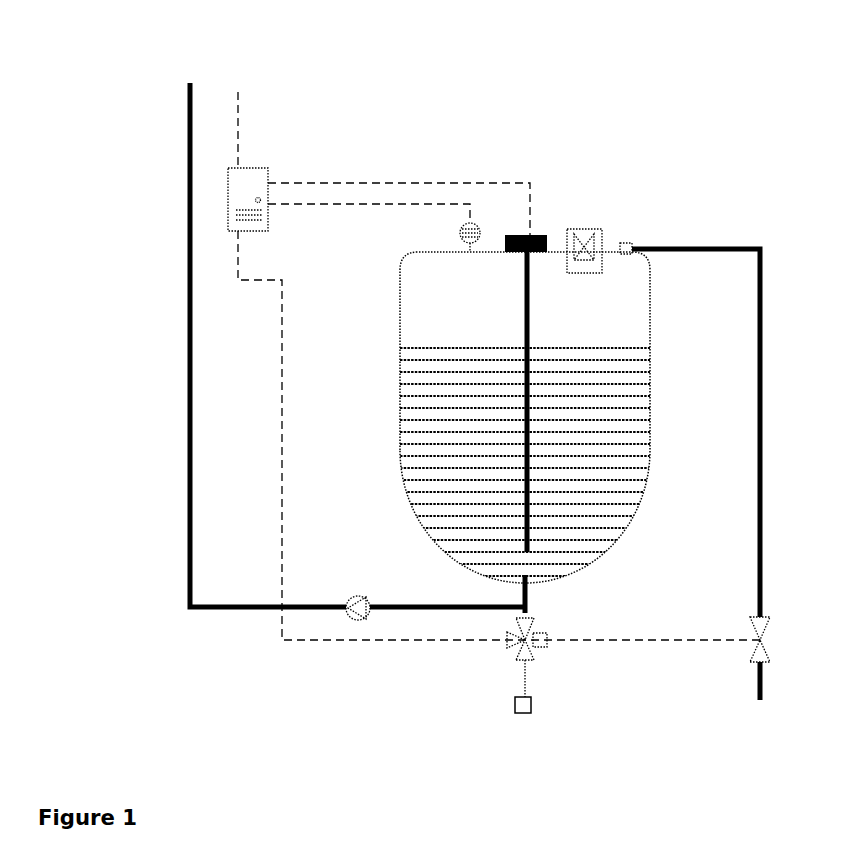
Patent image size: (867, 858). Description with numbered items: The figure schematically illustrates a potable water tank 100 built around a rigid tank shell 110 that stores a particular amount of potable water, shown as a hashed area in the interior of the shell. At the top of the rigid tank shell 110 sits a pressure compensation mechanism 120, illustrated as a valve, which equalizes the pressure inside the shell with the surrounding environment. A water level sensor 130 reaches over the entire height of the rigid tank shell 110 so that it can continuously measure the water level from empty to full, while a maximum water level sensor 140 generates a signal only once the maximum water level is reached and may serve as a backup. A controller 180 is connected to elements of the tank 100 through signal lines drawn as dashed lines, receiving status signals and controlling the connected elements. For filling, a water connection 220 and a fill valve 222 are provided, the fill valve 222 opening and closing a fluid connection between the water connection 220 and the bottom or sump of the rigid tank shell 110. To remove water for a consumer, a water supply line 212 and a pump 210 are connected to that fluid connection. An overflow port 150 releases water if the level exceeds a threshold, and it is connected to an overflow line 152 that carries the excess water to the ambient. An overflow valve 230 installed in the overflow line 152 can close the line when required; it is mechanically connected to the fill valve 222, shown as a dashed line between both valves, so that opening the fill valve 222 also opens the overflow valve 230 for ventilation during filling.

The potable water tank 100 is at (704, 184).
The rigid tank shell 110 is at (568, 578).
The pressure compensation mechanism 120 is at (583, 230).
The water level sensor 130 is at (515, 235).
The maximum water level sensor 140 is at (462, 222).
The overflow port 150 is at (620, 243).
The overflow line 152 is at (654, 247).
The controller 180 is at (250, 168).
The pump 210 is at (358, 620).
The water supply line 212 is at (230, 612).
The water connection 220 is at (518, 713).
The fill valve 222 is at (528, 660).
The overflow valve 230 is at (757, 661).